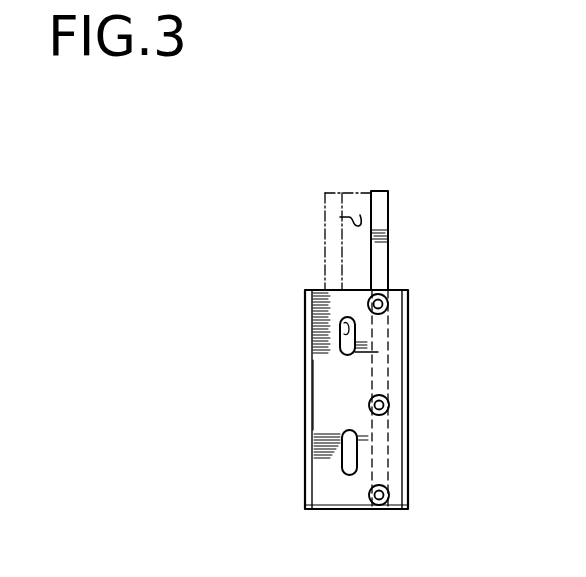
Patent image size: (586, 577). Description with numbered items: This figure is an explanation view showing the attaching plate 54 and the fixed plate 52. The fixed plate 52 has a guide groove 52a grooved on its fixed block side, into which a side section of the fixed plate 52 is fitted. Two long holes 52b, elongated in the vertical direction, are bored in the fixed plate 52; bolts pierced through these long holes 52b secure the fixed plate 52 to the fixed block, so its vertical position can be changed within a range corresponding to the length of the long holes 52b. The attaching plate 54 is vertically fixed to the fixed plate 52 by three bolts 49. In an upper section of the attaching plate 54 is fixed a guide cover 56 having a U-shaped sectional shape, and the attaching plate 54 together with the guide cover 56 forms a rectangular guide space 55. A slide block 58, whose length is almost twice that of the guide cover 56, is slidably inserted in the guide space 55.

The bolts 49 is at (407, 307).
The fixed plate 52 is at (315, 452).
The guide groove 52a is at (315, 372).
The long holes 52b is at (340, 340).
The attaching plate 54 is at (388, 230).
The guide space 55 is at (360, 215).
The guide cover 56 is at (328, 191).
The slide block 58 is at (347, 258).